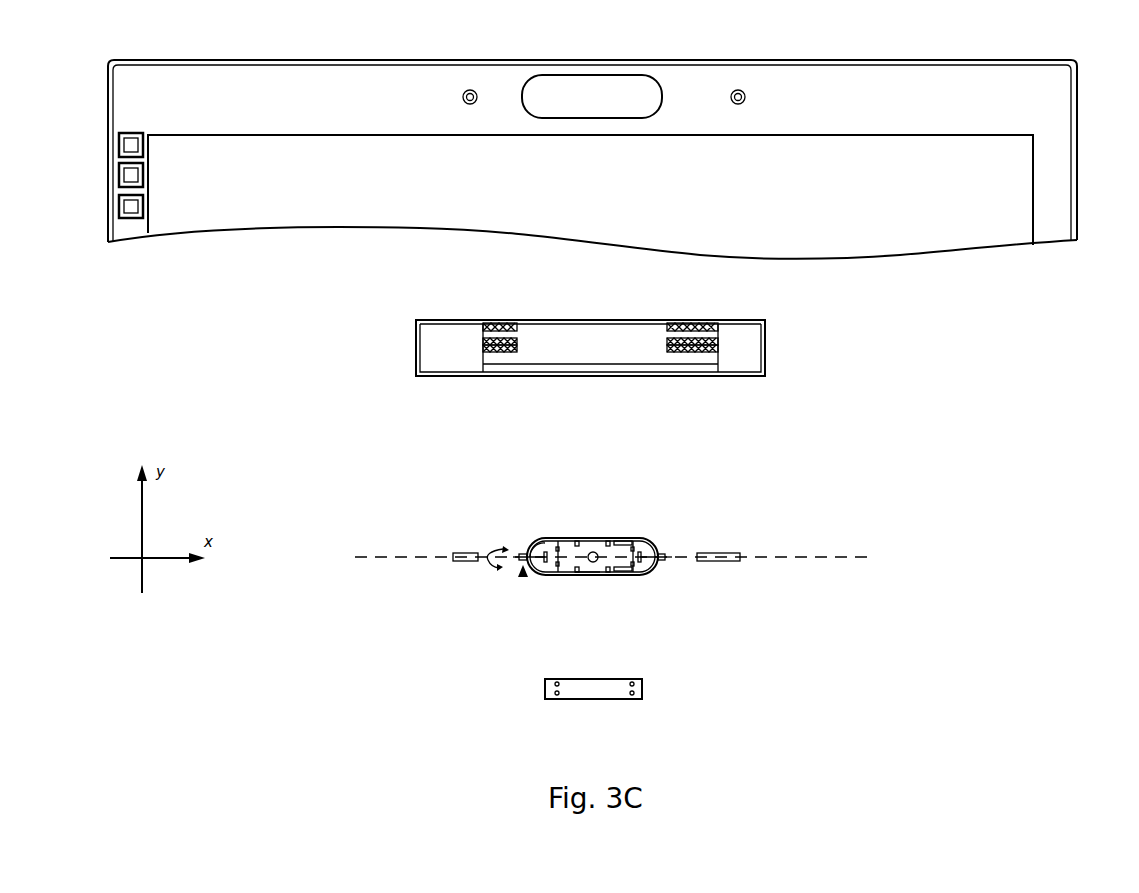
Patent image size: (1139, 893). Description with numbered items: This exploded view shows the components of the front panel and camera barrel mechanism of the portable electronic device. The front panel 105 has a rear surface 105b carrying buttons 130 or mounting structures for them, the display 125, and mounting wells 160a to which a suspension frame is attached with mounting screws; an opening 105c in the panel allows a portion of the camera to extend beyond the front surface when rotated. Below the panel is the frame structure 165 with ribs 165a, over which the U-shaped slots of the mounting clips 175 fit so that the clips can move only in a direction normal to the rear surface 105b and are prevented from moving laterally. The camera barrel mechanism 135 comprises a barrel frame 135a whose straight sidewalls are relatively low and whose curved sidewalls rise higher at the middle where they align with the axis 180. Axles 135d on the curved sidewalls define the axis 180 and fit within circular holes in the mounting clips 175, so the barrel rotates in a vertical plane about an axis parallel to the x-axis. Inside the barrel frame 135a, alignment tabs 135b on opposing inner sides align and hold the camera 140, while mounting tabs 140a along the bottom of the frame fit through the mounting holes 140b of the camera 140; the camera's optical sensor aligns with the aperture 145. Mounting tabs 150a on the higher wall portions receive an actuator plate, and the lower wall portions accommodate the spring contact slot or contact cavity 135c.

The front panel 105 is at (1073, 92).
The rear surface 105b is at (592, 153).
The opening 105c is at (592, 96).
The display 125 is at (590, 190).
The buttons 130 is at (92, 130).
The mounting wells 160a is at (463, 95).
The frame structure 165 is at (307, 308).
The rib 165a is at (492, 345).
The camera barrel mechanism 135 is at (322, 497).
The barrel frame 135a is at (533, 543).
The alignment tabs 135b is at (608, 540).
The spring contact slot or contact cavity 135c is at (585, 573).
The axle 135d is at (523, 577).
The camera 140 is at (407, 668).
The mounting tabs 140a is at (556, 560).
The mounting holes 140b is at (615, 724).
The aperture 145 is at (598, 563).
The mounting tabs 150a is at (640, 540).
The mounting clips 175 is at (464, 561).
The axis 180 is at (818, 553).